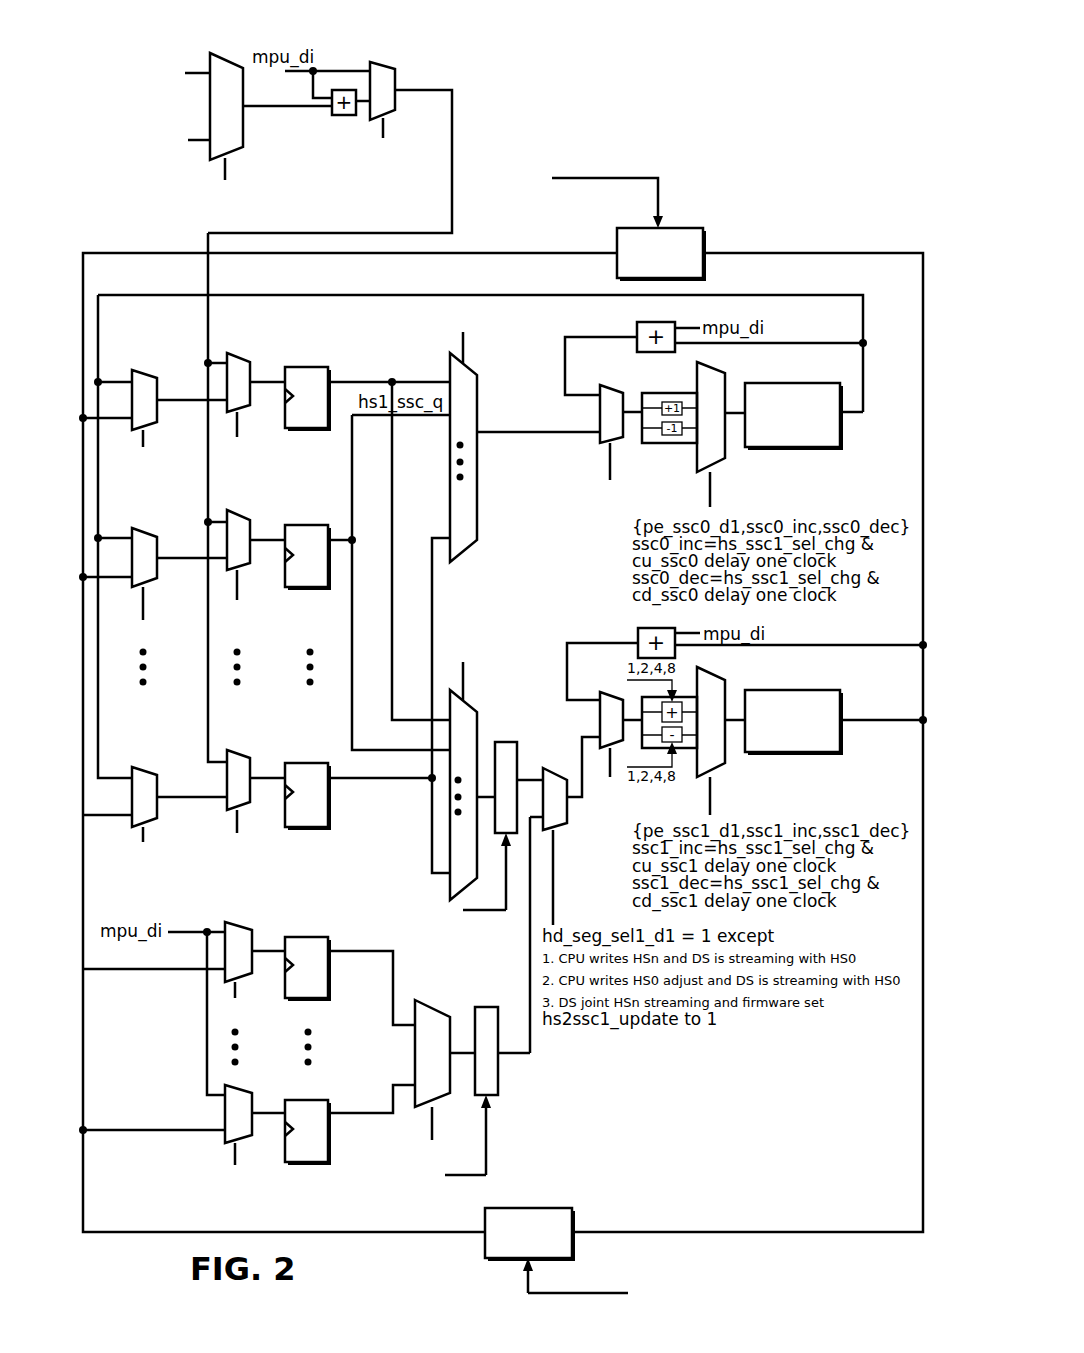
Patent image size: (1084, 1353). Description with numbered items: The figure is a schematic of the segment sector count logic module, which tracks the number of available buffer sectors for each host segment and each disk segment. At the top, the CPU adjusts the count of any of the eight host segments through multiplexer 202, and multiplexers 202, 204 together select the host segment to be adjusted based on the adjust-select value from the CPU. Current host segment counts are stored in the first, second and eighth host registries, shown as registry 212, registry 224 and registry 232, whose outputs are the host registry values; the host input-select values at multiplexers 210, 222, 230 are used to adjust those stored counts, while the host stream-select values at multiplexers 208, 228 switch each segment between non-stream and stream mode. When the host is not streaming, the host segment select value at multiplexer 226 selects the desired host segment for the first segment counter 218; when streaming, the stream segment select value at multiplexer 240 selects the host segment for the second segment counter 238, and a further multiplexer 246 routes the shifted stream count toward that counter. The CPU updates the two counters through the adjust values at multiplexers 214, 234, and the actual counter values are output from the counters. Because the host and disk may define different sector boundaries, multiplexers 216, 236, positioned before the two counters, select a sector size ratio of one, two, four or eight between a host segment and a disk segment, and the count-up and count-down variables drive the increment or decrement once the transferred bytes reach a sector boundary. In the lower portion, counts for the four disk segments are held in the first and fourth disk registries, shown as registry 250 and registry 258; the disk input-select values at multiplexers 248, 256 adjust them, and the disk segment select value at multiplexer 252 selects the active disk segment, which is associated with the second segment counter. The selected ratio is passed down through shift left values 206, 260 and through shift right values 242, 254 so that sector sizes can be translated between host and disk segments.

The multiplexer 202 is at (228, 57).
The multiplexer 204 is at (385, 60).
The shift left value 206 is at (703, 232).
The multiplexer 208 is at (143, 372).
The multiplexer 210 is at (236, 355).
The registry HS0 212 is at (326, 366).
The multiplexer 214 is at (612, 392).
The multiplexer 216 is at (707, 376).
The counter SSC0 218 is at (789, 392).
The multiplexer 222 is at (236, 514).
The registry HS1 224 is at (326, 524).
The multiplexer 226 is at (480, 497).
The multiplexer 228 is at (143, 769).
The multiplexer 230 is at (236, 752).
The registry HS7 232 is at (326, 762).
The multiplexer 234 is at (606, 694).
The multiplexer 236 is at (707, 681).
The counter SSC1 238 is at (842, 698).
The multiplexer 240 is at (143, 537).
The shift right value 242 is at (497, 740).
The hd segment select multiplexer 246 is at (568, 822).
The multiplexer 248 is at (238, 924).
The registry DS0 250 is at (330, 938).
The multiplexer 252 is at (440, 1010).
The shift right value 254 is at (498, 1008).
The multiplexer 256 is at (250, 1088).
The registry DS3 258 is at (330, 1100).
The shift left value 260 is at (548, 1208).